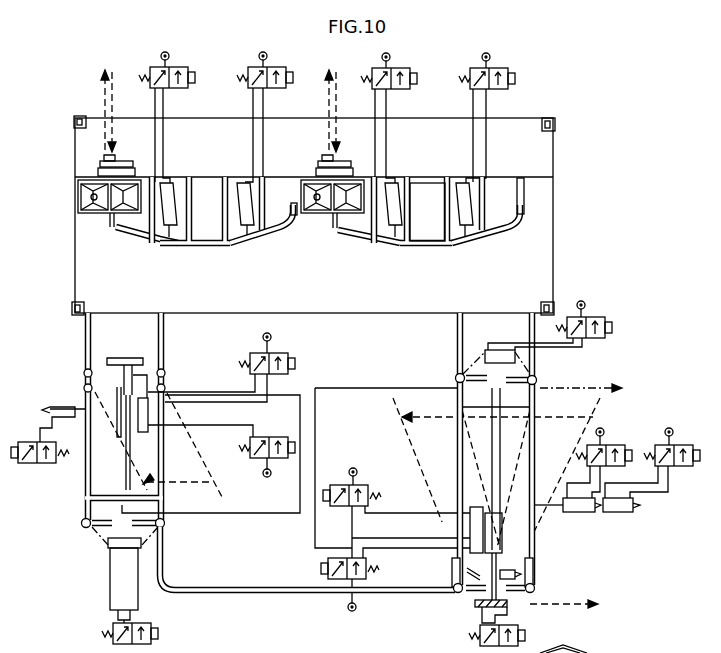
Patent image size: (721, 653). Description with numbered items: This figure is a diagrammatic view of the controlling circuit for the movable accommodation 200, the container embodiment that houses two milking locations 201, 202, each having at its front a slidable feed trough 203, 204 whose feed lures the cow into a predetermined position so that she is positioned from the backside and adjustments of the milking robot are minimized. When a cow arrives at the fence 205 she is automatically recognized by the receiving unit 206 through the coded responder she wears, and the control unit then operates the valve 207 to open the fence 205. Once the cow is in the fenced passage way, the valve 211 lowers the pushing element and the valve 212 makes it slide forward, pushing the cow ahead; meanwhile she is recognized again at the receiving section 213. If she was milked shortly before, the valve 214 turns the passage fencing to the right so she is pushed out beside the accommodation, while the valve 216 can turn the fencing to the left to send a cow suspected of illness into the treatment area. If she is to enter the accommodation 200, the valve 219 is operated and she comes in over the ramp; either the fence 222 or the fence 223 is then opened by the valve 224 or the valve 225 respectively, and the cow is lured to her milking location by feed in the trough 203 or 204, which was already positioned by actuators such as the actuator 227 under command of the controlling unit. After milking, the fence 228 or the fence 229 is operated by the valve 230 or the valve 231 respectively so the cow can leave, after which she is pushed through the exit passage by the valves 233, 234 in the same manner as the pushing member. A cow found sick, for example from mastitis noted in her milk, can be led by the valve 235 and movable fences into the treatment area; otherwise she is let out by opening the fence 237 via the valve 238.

The movable accommodation 200 is at (556, 180).
The milking location 201 is at (422, 207).
The milking location 202 is at (202, 197).
The slidable feed trough 203 is at (351, 220).
The slidable feed trough 204 is at (119, 228).
The fence 205 is at (517, 603).
The receiving unit 206 is at (533, 598).
The valve 207 is at (478, 637).
The valve 211 is at (362, 483).
The valve 212 is at (372, 581).
The receiving section 213 is at (537, 387).
The valve 214 is at (605, 440).
The valve 216 is at (684, 443).
The valve 219 is at (585, 308).
The fence 222 is at (483, 242).
The fence 223 is at (268, 237).
The valve 224 is at (502, 67).
The valve 225 is at (268, 64).
The actuator 227 is at (124, 161).
The fence 228 is at (370, 237).
The fence 229 is at (127, 233).
The valve 230 is at (398, 66).
The valve 231 is at (170, 64).
The valve 233 is at (283, 350).
The valve 234 is at (256, 455).
The valve 235 is at (25, 440).
The fence 237 is at (104, 545).
The valve 238 is at (145, 645).